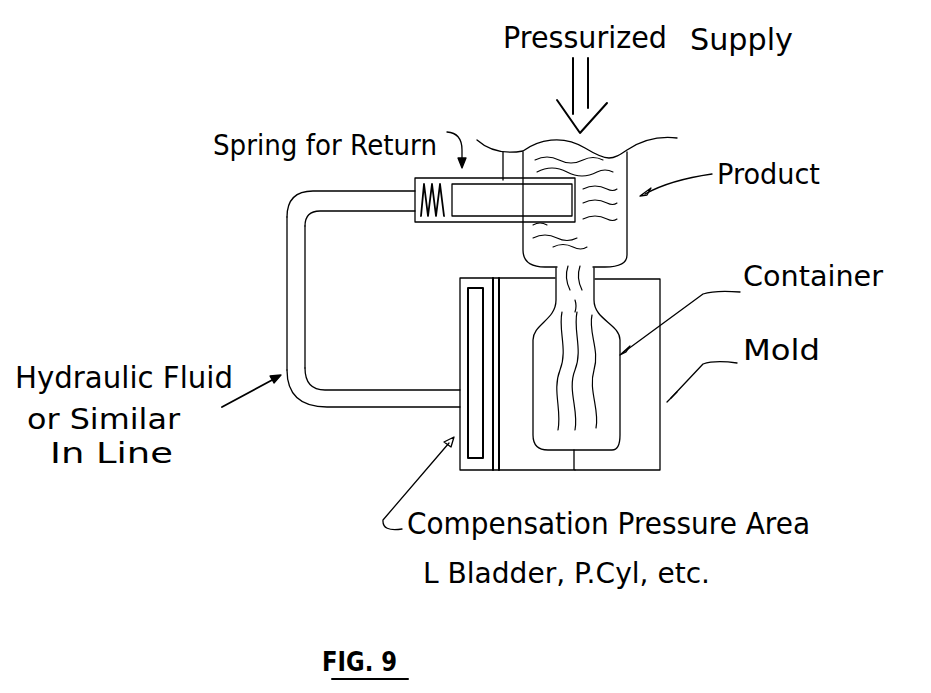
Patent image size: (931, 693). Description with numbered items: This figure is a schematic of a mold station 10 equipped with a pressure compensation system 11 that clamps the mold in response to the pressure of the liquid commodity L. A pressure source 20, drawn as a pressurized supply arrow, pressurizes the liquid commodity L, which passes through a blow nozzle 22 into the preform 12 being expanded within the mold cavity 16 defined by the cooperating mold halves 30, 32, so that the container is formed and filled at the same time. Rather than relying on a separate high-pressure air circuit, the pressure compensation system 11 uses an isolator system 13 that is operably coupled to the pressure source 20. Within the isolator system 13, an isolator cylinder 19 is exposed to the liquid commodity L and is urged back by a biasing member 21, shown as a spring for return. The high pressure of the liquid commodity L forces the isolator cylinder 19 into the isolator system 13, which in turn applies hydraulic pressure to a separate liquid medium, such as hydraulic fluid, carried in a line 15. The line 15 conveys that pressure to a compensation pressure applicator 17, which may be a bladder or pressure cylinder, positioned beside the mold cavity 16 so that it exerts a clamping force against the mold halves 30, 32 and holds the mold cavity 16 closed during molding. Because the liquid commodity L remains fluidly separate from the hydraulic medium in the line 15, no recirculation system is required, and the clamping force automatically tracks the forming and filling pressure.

The mold station 10 is at (747, 113).
The pressure compensation system 11 is at (236, 246).
The preform 12 is at (319, 204).
The isolator system 13 is at (440, 107).
The line 15 is at (338, 410).
The mold cavity 16 is at (608, 415).
The compensation pressure applicator 17 is at (444, 314).
The isolator cylinder 19 is at (503, 152).
The pressure source 20 is at (590, 76).
The biasing member 21 is at (428, 222).
The blow nozzle 22 is at (594, 272).
The mold half 30 is at (535, 471).
The mold half 32 is at (619, 473).
The liquid commodity L is at (634, 168).